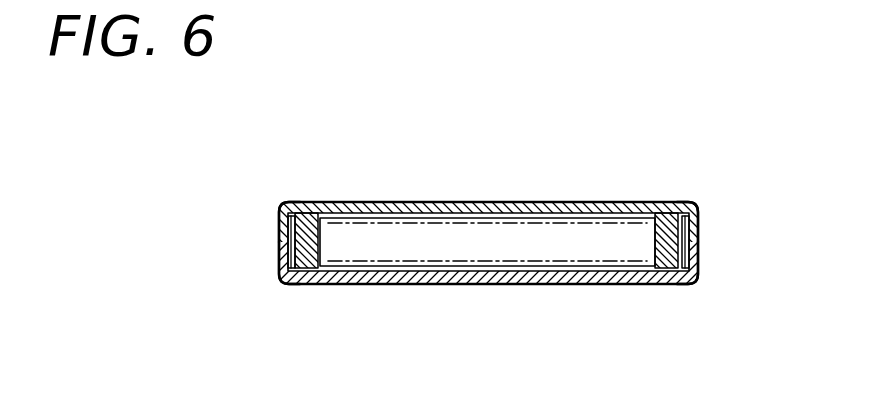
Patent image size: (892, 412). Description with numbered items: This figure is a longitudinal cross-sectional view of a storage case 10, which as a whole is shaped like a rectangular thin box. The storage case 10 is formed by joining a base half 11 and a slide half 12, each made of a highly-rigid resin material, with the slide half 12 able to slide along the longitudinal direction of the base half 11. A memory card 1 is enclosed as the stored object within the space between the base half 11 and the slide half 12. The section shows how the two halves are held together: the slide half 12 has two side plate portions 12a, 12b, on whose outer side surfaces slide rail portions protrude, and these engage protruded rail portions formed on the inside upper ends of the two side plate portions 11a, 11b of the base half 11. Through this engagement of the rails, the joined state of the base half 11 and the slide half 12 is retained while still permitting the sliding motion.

The memory card 1 is at (423, 222).
The storage case 10 is at (568, 186).
The base half 11 is at (495, 284).
The side plate portion of the base half 11a is at (280, 234).
The side plate portion of the base half 11b is at (698, 229).
The slide half 12 is at (487, 205).
The side plate portion of the slide half 12a is at (282, 262).
The side plate portion of the slide half 12b is at (700, 265).